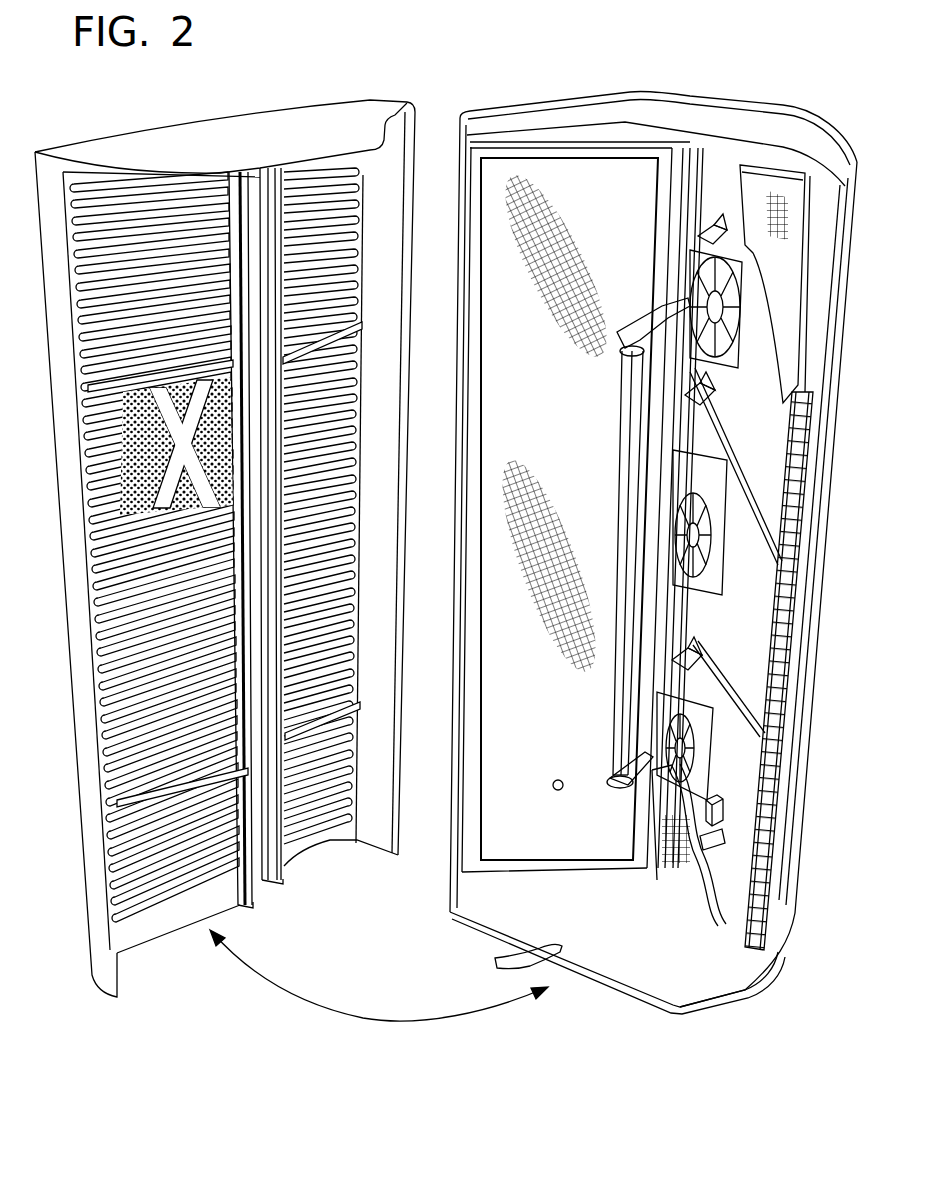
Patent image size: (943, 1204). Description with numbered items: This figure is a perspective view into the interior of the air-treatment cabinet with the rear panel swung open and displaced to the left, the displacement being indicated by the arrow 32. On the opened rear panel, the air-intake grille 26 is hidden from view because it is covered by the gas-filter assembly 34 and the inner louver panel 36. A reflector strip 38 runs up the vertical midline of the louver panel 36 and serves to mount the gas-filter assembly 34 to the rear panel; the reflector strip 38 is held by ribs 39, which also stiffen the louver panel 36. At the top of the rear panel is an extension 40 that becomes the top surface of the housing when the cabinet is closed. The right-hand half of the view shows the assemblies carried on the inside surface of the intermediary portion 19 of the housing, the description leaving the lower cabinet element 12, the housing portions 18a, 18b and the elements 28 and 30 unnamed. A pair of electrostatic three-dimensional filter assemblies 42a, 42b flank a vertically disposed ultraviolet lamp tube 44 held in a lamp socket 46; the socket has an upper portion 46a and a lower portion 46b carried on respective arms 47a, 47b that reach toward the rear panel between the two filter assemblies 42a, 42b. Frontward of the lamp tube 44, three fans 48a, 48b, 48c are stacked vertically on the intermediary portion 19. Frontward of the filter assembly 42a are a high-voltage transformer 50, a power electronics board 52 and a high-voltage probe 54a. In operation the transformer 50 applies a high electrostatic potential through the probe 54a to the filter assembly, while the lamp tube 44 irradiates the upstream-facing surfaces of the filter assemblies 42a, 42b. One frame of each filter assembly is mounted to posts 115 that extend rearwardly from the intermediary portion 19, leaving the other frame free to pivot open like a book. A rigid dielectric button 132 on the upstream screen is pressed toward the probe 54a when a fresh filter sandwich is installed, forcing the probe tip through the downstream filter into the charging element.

The chassis 12 is at (680, 982).
The side wall 18a is at (842, 137).
The side wall 18b is at (522, 102).
The intermediary portion 19 is at (600, 100).
The air-intake grille 26 is at (80, 835).
The top cover 28 is at (705, 102).
The hook 30 is at (533, 967).
The arrow 32 is at (357, 1017).
The gas-filter assembly 34 is at (153, 447).
The inner louver panel 36 is at (120, 578).
The reflector strip 38 is at (248, 242).
The ribs 39 is at (175, 370).
The extension 40 is at (170, 150).
The electrostatic 3-dimensional (E3D) filter assembly 42a is at (779, 270).
The electrostatic 3-dimensional (E3D) filter assembly 42b is at (493, 799).
The ultraviolet (UV) lamp tube 44 is at (628, 452).
The lamp socket 46 is at (625, 358).
The upper portion of lamp socket 46a is at (620, 352).
The lower portion of lamp socket 46b is at (612, 770).
The arm 47a is at (640, 313).
The arm 47b is at (613, 788).
The fan 48a is at (700, 277).
The fan 48b is at (688, 531).
The fan 48c is at (693, 757).
The high-voltage transformer 50 is at (723, 815).
The power electronics board 52 is at (708, 848).
The high-voltage probe 54a is at (724, 838).
The posts 115 is at (707, 222).
The button 132 is at (555, 785).